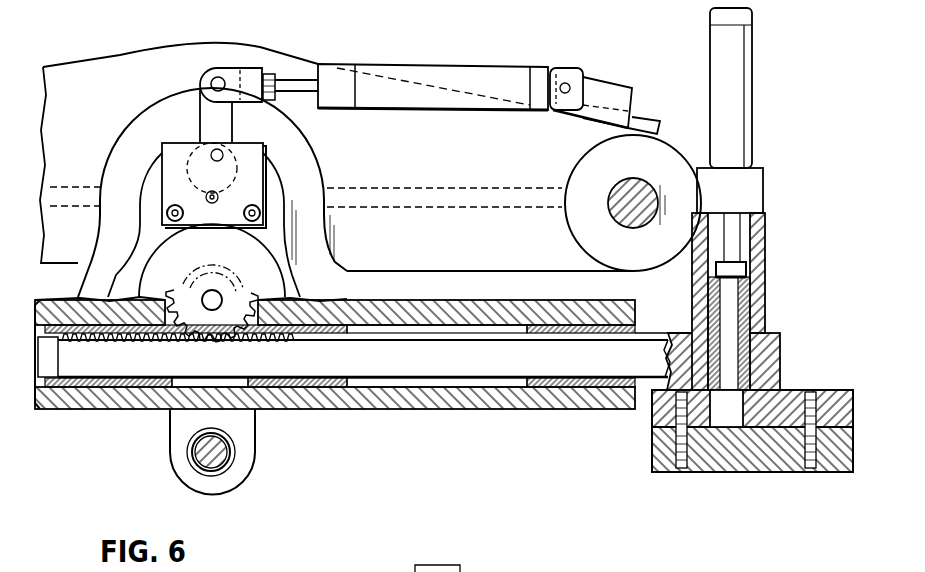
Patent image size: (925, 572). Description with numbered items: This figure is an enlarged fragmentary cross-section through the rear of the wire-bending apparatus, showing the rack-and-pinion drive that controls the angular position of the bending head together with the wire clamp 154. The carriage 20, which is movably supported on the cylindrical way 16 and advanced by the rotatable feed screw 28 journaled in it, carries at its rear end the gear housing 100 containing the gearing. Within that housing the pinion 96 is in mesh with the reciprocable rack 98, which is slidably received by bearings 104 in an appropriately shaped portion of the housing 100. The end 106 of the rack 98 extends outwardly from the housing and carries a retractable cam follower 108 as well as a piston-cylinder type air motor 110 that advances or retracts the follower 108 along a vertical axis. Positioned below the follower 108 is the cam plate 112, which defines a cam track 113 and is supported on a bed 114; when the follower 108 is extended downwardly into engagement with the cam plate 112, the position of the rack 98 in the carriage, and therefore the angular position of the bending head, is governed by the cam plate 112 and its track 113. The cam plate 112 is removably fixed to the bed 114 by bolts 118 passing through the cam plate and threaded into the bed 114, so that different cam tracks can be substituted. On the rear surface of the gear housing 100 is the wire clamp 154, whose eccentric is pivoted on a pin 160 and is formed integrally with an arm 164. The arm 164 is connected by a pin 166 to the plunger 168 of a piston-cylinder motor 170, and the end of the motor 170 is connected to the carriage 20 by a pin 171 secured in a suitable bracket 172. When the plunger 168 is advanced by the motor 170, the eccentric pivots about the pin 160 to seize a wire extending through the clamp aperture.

The cylindrical way 16 is at (636, 200).
The carriage 20 is at (290, 52).
The feed screw 28 is at (226, 458).
The pinion 96 is at (195, 292).
The rack 98 is at (418, 363).
The housing 100 is at (462, 412).
The bearings 104 is at (327, 389).
The end of the rack 106 is at (680, 337).
The cam follower 108 is at (732, 428).
The piston-cylinder type air motor 110 is at (738, 108).
The cam plate 112 is at (731, 387).
The cam track 113 is at (705, 428).
The bed 114 is at (762, 460).
The bolts 118 is at (678, 441).
The wire clamp 154 is at (188, 140).
The pin 160 is at (219, 156).
The arm 164 is at (205, 108).
The pin 166 is at (220, 77).
The plunger 168 is at (308, 95).
The piston-cylinder motor 170 is at (405, 72).
The pin 171 is at (565, 83).
The bracket 172 is at (605, 92).